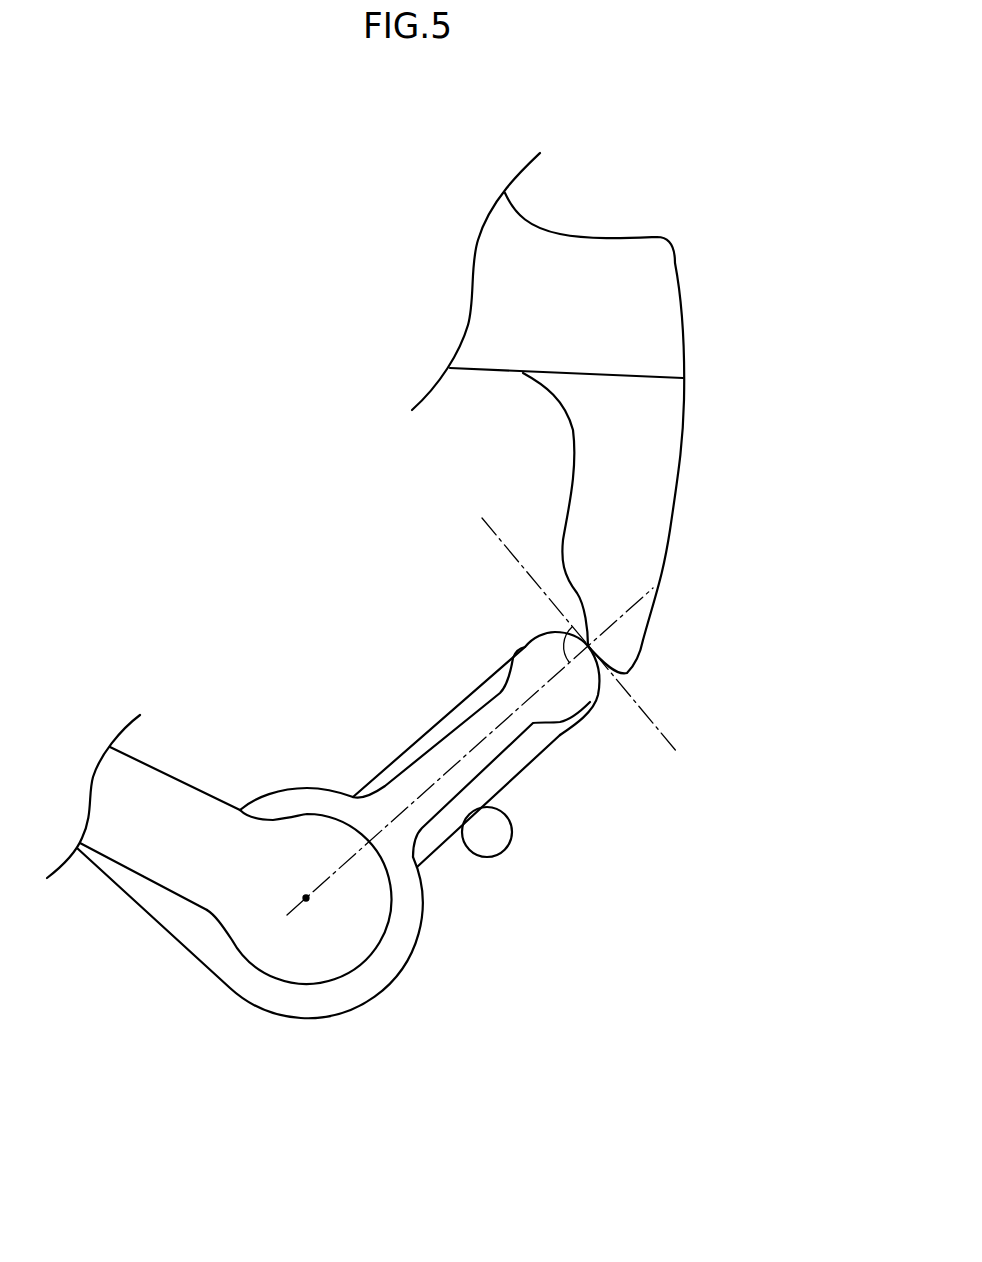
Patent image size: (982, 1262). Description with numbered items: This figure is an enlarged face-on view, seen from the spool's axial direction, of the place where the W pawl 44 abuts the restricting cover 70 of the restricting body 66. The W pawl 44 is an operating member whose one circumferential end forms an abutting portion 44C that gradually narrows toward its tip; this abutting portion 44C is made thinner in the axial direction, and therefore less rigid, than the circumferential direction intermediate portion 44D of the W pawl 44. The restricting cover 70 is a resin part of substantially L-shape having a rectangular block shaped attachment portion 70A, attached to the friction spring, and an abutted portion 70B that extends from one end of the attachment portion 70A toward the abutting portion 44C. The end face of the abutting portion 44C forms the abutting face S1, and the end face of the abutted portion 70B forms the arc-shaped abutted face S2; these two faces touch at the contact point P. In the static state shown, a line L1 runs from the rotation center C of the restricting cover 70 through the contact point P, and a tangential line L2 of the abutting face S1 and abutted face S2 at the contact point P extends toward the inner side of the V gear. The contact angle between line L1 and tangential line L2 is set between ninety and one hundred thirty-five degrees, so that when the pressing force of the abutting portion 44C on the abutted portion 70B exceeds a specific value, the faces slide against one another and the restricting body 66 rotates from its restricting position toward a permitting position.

The W pawl 44 is at (618, 234).
The abutting portion 44C is at (683, 453).
The circumferential direction intermediate portion 44D is at (538, 222).
The abutted face S2 is at (590, 632).
The abutting face S1 is at (593, 700).
The contact point P is at (598, 648).
The line L1 is at (647, 600).
The tangential line L2 is at (666, 743).
The restricting cover 70 is at (417, 929).
The attachment portion 70A is at (125, 892).
The abutted portion 70B is at (531, 770).
The restricting body 66 is at (421, 988).
The rotation center C is at (306, 898).